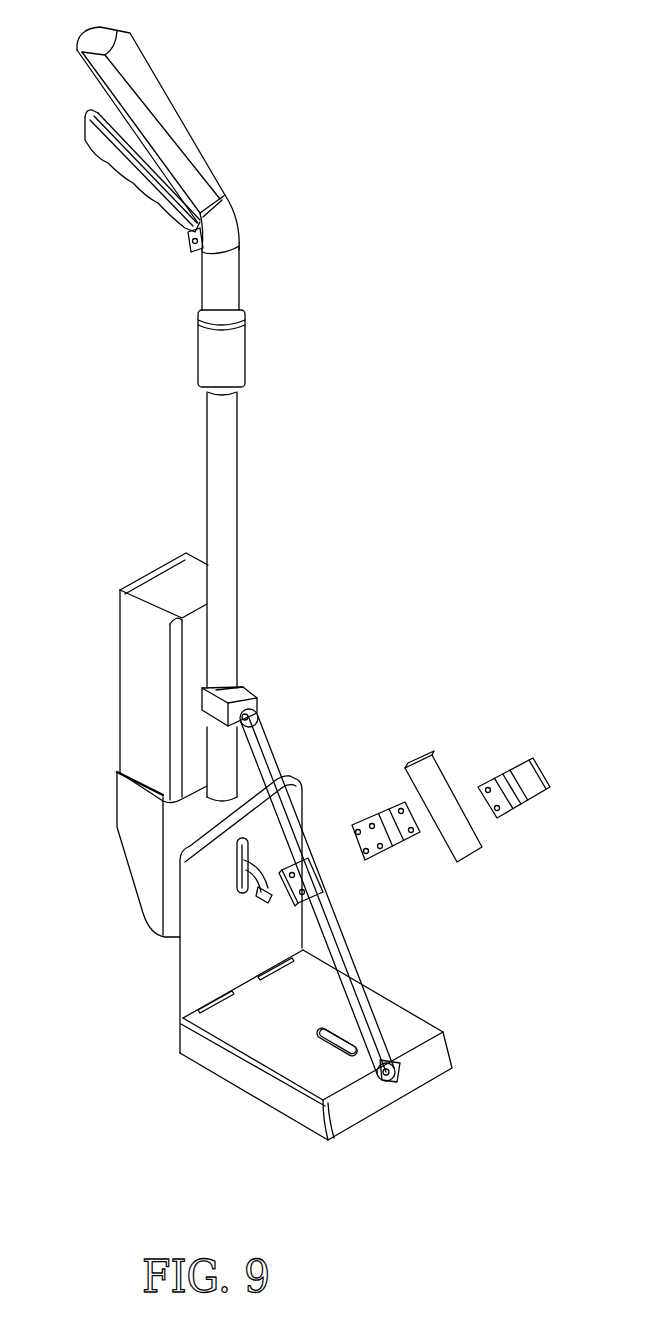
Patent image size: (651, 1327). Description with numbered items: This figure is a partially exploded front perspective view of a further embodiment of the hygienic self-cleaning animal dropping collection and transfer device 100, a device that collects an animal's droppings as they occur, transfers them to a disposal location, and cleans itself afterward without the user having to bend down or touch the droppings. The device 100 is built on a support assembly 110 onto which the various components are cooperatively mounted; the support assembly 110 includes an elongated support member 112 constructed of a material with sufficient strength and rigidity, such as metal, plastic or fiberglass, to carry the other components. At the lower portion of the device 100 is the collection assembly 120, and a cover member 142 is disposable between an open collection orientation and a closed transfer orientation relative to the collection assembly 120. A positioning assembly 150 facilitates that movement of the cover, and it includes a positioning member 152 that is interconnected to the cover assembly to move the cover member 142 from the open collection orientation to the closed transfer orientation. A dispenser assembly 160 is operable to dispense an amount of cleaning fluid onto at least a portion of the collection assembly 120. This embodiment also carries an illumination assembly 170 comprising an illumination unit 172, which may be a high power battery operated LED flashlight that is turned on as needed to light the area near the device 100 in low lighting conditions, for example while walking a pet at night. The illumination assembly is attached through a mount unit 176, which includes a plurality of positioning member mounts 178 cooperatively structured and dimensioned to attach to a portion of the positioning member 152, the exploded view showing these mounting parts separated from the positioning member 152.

The hygienic self-cleaning animal dropping collection and transfer device 100 is at (430, 136).
The support assembly 110 is at (288, 281).
The support member 112 is at (238, 457).
The collection assembly 120 is at (192, 1078).
The cover member 142 is at (317, 1067).
The positioning assembly 150 is at (273, 669).
The positioning member 152 is at (277, 757).
The dispenser assembly 160 is at (92, 728).
The illumination assembly 170 is at (473, 907).
The illumination unit 172 is at (440, 770).
The mount unit 176 is at (527, 803).
The positioning member mount 178 is at (412, 838).